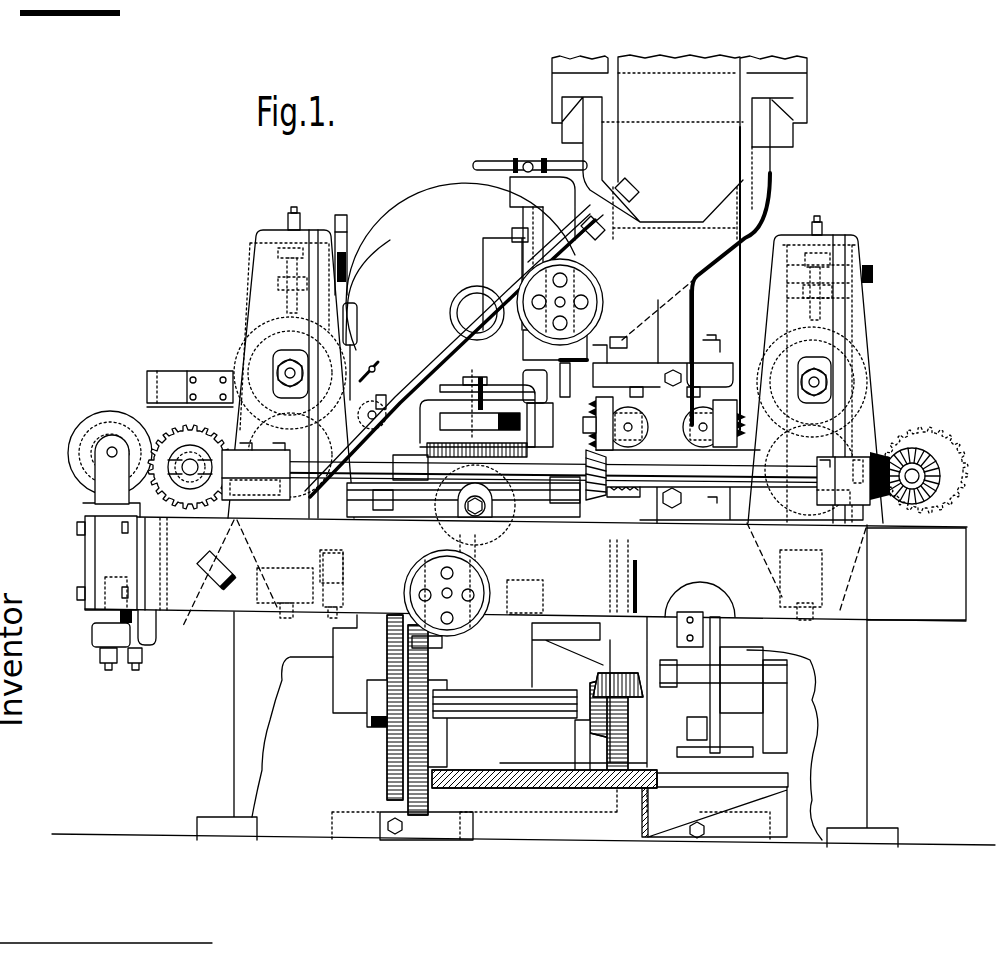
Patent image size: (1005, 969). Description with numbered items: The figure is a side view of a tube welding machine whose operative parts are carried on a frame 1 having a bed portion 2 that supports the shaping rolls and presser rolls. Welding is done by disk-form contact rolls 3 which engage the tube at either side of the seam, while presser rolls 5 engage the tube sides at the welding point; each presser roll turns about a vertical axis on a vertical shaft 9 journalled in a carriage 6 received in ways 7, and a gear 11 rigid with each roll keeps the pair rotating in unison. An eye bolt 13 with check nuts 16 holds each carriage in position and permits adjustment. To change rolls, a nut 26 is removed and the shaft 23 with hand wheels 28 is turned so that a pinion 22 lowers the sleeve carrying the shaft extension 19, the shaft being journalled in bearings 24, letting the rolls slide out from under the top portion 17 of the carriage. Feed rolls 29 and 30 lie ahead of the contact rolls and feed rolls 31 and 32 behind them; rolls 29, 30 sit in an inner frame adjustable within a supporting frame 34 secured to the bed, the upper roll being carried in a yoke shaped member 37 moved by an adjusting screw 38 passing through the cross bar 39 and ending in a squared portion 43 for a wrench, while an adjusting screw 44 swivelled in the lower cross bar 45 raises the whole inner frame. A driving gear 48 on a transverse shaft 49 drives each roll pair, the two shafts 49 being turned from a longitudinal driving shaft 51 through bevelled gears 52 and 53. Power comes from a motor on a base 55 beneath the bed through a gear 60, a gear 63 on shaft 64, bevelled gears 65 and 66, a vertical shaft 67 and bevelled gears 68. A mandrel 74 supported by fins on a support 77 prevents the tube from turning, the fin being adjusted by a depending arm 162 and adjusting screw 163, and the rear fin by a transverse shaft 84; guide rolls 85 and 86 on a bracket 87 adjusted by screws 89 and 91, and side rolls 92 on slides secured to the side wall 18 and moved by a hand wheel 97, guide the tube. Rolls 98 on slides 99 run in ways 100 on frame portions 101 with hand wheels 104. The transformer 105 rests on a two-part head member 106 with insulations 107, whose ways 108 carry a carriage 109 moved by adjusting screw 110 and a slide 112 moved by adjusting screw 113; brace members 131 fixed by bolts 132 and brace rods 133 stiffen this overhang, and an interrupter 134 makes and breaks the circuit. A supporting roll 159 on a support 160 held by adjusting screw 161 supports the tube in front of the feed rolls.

The frame 1 is at (856, 662).
The bed portion 2 is at (966, 566).
The contact rolls 3 is at (416, 229).
The presser rolls 5 is at (445, 420).
The carriage 6 is at (548, 397).
The ways 7 is at (427, 510).
The vertical shaft 9 is at (515, 517).
The gear 11 is at (520, 450).
The eye bolt 13 is at (468, 512).
The check nuts 16 is at (490, 510).
The top portion of the carriage 17 is at (510, 385).
The side wall 18 is at (543, 451).
The extension 19 is at (478, 560).
The pinion 22 is at (464, 636).
The shaft 23 is at (447, 593).
The bearings 24 is at (452, 548).
The nut 26 is at (478, 377).
The hand wheels 28 is at (443, 636).
The upper feed roll 29 is at (262, 352).
The lower feed roll 30 is at (247, 378).
The feed roll 31 is at (865, 367).
The feed roll 32 is at (868, 410).
The supporting frame 34 is at (246, 305).
The yoke shaped member 37 is at (262, 282).
The adjusting screw 38 is at (299, 222).
The cross bar 39 is at (272, 262).
The squared portion 43 is at (293, 210).
The adjusting screw 44 is at (226, 610).
The lower cross bar 45 is at (300, 605).
The driving gear 48 is at (170, 432).
The shaft 49 is at (192, 467).
The driving shaft 51 is at (740, 520).
The bevelled gear 52 is at (215, 455).
The bevelled gear 53 is at (194, 502).
The base 55 is at (566, 788).
The gear 60 is at (387, 748).
The gear 63 is at (410, 800).
The shaft 64 is at (517, 720).
The bevelled gear 65 is at (590, 692).
The bevelled gear 66 is at (606, 677).
The vertical shaft 67 is at (637, 573).
The bevelled gears 68 is at (595, 490).
The mandrel 74 is at (135, 425).
The support 77 is at (205, 378).
The transverse shaft 84 is at (378, 367).
The guide rolls 85 is at (300, 450).
The guide rolls 86 is at (382, 376).
The bracket 87 is at (357, 334).
The adjusting screw 89 is at (348, 258).
The adjusting screw 91 is at (345, 560).
The side guide rolls 92 is at (372, 418).
The hand wheel 97 is at (386, 402).
The rolls 98 is at (592, 421).
The slide 99 is at (634, 405).
The ways 100 is at (652, 395).
The frame portion 101 is at (668, 395).
The hand wheel 104 is at (696, 426).
The transformer 105 is at (720, 160).
The head member 106 is at (716, 290).
The insulations 107 is at (737, 383).
The ways 108 is at (592, 345).
The carriage 109 is at (533, 248).
The adjusting screw 110 is at (570, 297).
The slide 112 is at (490, 258).
The adjusting screw 113 is at (527, 158).
The brace members 131 is at (762, 230).
The bolts 132 is at (676, 383).
The brace rods 133 is at (443, 338).
The interrupter 134 is at (750, 707).
The supporting roll 159 is at (72, 441).
The support 160 is at (95, 545).
The adjusting screw 161 is at (105, 621).
The depending arm 162 is at (170, 633).
The adjusting screw 163 is at (142, 663).